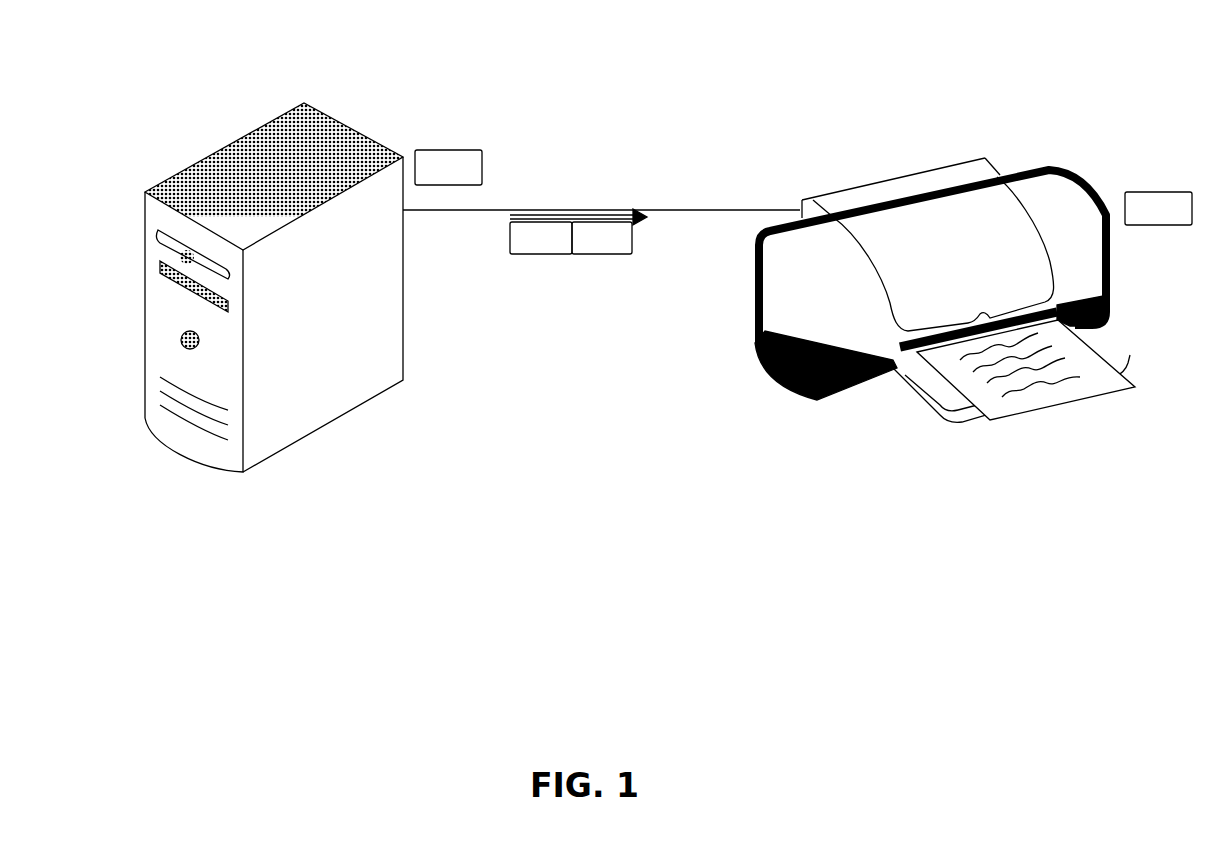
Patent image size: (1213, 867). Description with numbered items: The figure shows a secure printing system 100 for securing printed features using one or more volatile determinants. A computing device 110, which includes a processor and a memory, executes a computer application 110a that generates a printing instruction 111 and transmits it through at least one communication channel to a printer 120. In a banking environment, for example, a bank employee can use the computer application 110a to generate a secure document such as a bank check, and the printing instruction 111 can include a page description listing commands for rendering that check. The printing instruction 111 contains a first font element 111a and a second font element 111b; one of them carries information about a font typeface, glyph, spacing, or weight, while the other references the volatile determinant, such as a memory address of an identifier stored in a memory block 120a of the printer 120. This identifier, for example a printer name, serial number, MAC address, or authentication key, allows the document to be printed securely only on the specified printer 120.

The secure printing system 100 is at (1114, 43).
The computing device 110 is at (357, 132).
The computer application 110a is at (448, 167).
The printing instruction 111 is at (621, 210).
The first font element 111a is at (541, 238).
The second font element 111b is at (602, 238).
The printer 120 is at (1073, 177).
The memory block 120a is at (1158, 208).